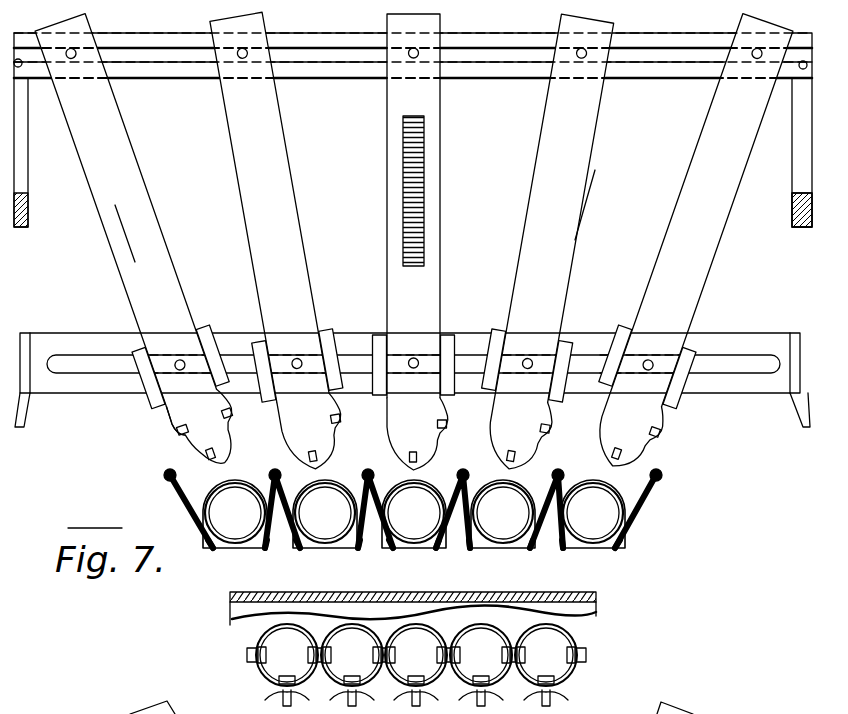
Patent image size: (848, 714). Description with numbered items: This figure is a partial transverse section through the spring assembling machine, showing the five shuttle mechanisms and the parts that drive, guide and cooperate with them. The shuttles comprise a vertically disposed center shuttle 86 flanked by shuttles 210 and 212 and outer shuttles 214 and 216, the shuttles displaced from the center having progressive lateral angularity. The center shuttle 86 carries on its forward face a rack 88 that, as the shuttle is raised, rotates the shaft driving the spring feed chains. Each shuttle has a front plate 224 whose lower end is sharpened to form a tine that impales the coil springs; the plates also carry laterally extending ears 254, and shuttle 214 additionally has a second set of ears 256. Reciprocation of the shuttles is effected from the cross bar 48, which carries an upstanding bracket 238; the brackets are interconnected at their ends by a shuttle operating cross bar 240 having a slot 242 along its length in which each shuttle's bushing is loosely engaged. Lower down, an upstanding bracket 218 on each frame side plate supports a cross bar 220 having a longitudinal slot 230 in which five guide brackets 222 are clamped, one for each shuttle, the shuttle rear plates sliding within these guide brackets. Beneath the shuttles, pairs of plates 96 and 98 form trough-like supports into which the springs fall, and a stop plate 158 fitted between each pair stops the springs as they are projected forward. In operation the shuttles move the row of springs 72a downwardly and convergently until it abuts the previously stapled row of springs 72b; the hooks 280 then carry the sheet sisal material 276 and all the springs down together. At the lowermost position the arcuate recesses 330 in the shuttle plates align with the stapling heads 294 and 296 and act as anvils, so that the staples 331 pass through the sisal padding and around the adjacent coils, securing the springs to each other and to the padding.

The shuttle operating cross bar 240 is at (474, 45).
The slot 242 is at (360, 56).
The upstanding bracket 238 is at (24, 170).
The cross bar 48 is at (796, 217).
The shuttle structure 214 is at (118, 143).
The shuttle structure 210 is at (282, 148).
The center shuttle 86 is at (427, 93).
The rack 88 is at (423, 177).
The shuttle structure 212 is at (575, 141).
The shuttle structure 216 is at (700, 257).
The front plate 224 is at (150, 249).
The cross bar 220 is at (75, 335).
The longitudinal slot 230 is at (83, 367).
The upstanding bracket 218 is at (25, 425).
The guide bracket 222 is at (195, 337).
The laterally extending ears 254 is at (232, 429).
The arcuate recesses 330 is at (172, 424).
The second set of ears 256 is at (165, 430).
The row of springs 72a is at (213, 481).
The stop plate 158 is at (238, 527).
The plate 98 is at (193, 510).
The plate 96 is at (268, 535).
The sheet sisal material 276 is at (590, 592).
The row of springs 72b is at (585, 627).
The stapling head 296 is at (247, 657).
The staples 331 is at (247, 652).
The stapling head 294 is at (280, 688).
The hooks 280 is at (283, 703).